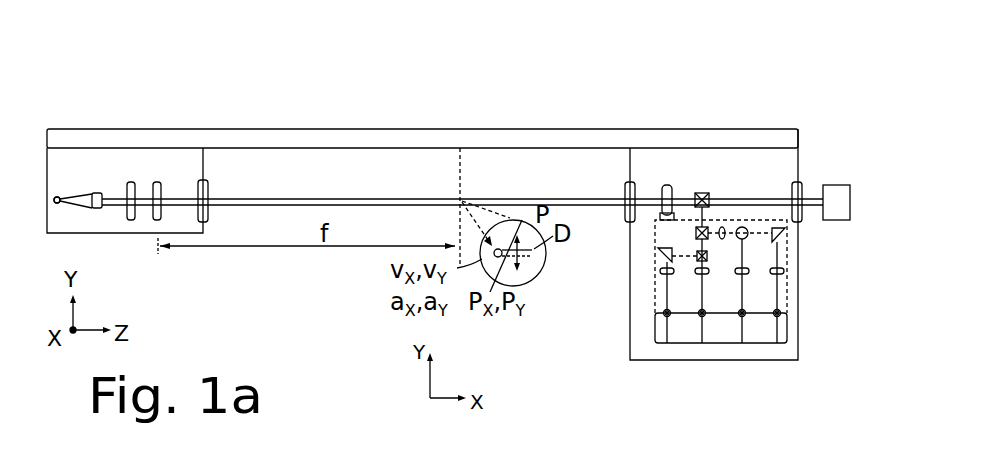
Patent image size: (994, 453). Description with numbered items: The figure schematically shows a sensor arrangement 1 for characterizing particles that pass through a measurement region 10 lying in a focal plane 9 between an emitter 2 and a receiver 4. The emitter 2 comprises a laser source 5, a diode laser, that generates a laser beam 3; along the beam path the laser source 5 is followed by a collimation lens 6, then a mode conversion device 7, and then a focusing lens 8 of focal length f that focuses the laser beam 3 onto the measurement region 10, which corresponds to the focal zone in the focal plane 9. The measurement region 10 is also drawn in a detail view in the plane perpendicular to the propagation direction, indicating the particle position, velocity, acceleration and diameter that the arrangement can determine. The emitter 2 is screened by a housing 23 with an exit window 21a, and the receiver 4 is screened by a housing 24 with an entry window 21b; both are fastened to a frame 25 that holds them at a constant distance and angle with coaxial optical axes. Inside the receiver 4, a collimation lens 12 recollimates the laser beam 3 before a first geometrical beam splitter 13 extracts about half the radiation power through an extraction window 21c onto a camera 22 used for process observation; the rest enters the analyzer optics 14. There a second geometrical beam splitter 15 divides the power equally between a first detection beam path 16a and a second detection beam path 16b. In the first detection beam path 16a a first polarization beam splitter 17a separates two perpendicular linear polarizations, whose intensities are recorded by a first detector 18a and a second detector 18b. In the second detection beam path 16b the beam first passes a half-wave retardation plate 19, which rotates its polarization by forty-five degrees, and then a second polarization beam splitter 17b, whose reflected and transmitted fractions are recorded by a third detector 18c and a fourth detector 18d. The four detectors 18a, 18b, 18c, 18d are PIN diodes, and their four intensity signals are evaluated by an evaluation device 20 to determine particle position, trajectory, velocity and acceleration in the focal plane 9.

The sensor arrangement 1 is at (110, 66).
The emitter 2 is at (55, 188).
The laser beam 3 is at (240, 199).
The receiver 4 is at (723, 162).
The laser source 5 is at (60, 196).
The collimation lens 6 is at (97, 193).
The mode conversion device 7 is at (131, 182).
The focusing lens 8 is at (157, 182).
The focal plane 9 is at (463, 158).
The measurement region 10 is at (461, 199).
The collimation lens 12 is at (665, 184).
The first geometrical beam splitter 13 is at (702, 192).
The analyzer optics 14 is at (790, 256).
The second geometrical beam splitter 15 is at (698, 229).
The first detection beam path 16a is at (648, 254).
The second detection beam path 16b is at (797, 286).
The first polarization beam splitter 17a is at (697, 254).
The second polarization beam splitter 17b is at (742, 227).
The first detector 18a is at (662, 317).
The second detector 18b is at (700, 316).
The third detector 18c is at (742, 344).
The fourth detector 18d is at (778, 346).
The λ/2 retardation plate 19 is at (722, 240).
The evaluation device 20 is at (787, 333).
The exit window 21a is at (203, 180).
The entry window 21b is at (628, 182).
The extraction window 21c is at (794, 182).
The camera 22 is at (830, 184).
The housing 23 is at (47, 160).
The housing 24 is at (800, 150).
The frame 25 is at (352, 129).